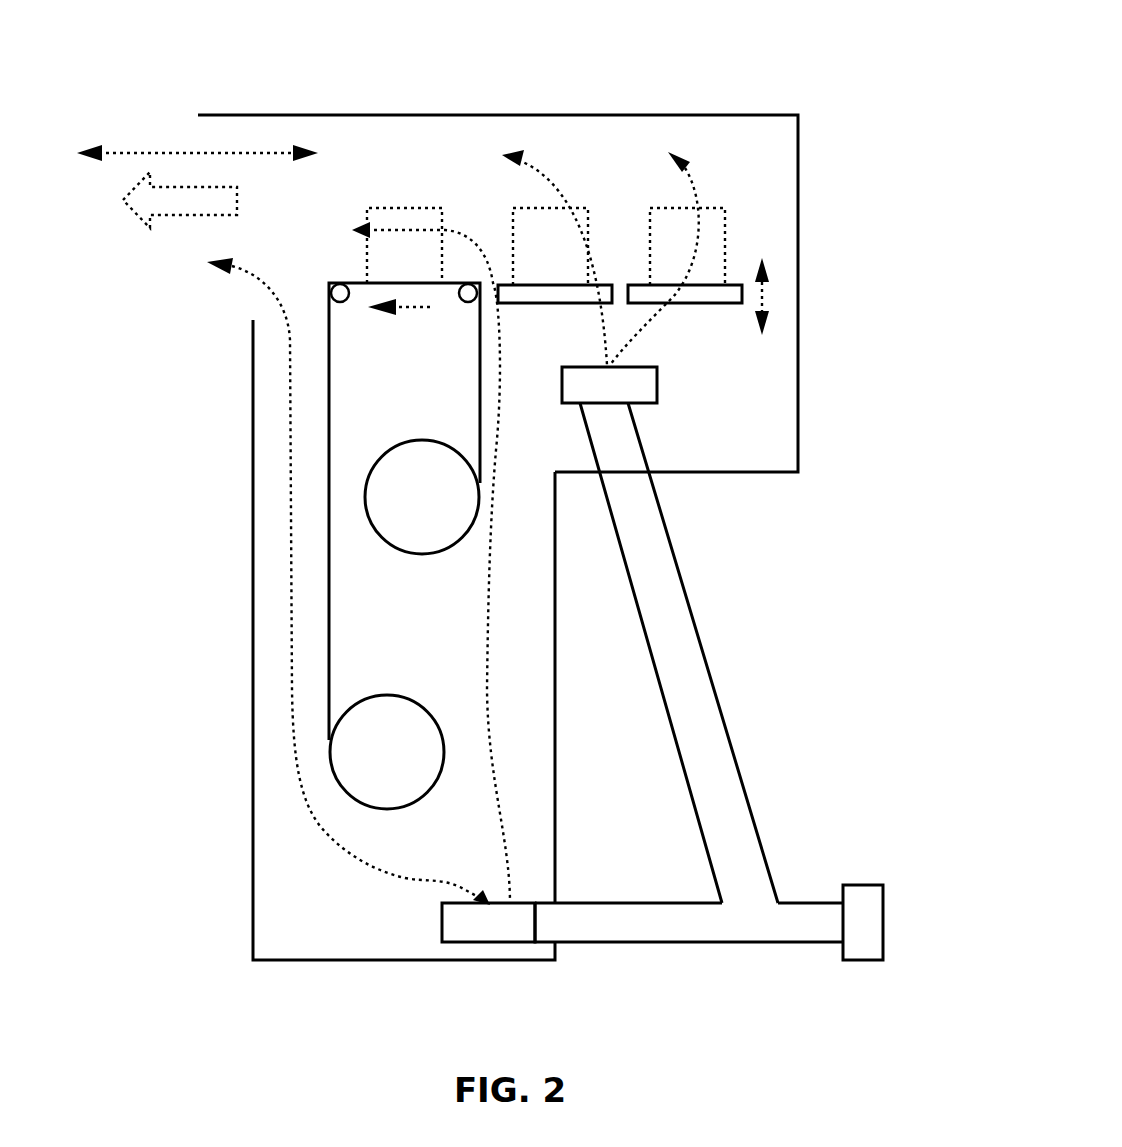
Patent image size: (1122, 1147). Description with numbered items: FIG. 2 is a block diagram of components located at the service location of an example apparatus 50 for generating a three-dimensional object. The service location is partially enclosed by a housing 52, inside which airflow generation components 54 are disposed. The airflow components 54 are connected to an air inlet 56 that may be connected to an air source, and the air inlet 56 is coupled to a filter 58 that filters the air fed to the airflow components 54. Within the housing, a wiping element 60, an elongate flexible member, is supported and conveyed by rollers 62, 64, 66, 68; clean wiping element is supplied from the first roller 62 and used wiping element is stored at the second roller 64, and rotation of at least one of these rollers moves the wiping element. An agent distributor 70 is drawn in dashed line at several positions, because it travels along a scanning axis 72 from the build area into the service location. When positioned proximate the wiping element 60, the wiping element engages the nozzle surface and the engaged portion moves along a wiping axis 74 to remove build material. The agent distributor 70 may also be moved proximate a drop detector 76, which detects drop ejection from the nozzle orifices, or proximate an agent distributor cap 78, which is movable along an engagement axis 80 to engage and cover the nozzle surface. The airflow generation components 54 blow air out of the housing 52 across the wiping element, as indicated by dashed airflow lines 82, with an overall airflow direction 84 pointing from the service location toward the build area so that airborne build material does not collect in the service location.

The apparatus 50 is at (822, 48).
The housing 52 is at (798, 230).
The airflow generation components 54 is at (657, 383).
The air inlet 56 is at (750, 793).
The filter 58 is at (883, 950).
The wiping element 60 is at (482, 418).
The first roller 62 is at (408, 531).
The second roller 64 is at (373, 789).
The roller 66 is at (465, 303).
The roller 68 is at (343, 303).
The agent distributor 70 is at (365, 210).
The scanning axis 72 is at (197, 143).
The wiping axis 74 is at (400, 320).
The drop detector 76 is at (555, 303).
The agent distributor cap 78 is at (687, 303).
The engagement axis 80 is at (773, 290).
The airflow lines 82 is at (434, 516).
The overall airflow direction 84 is at (163, 215).